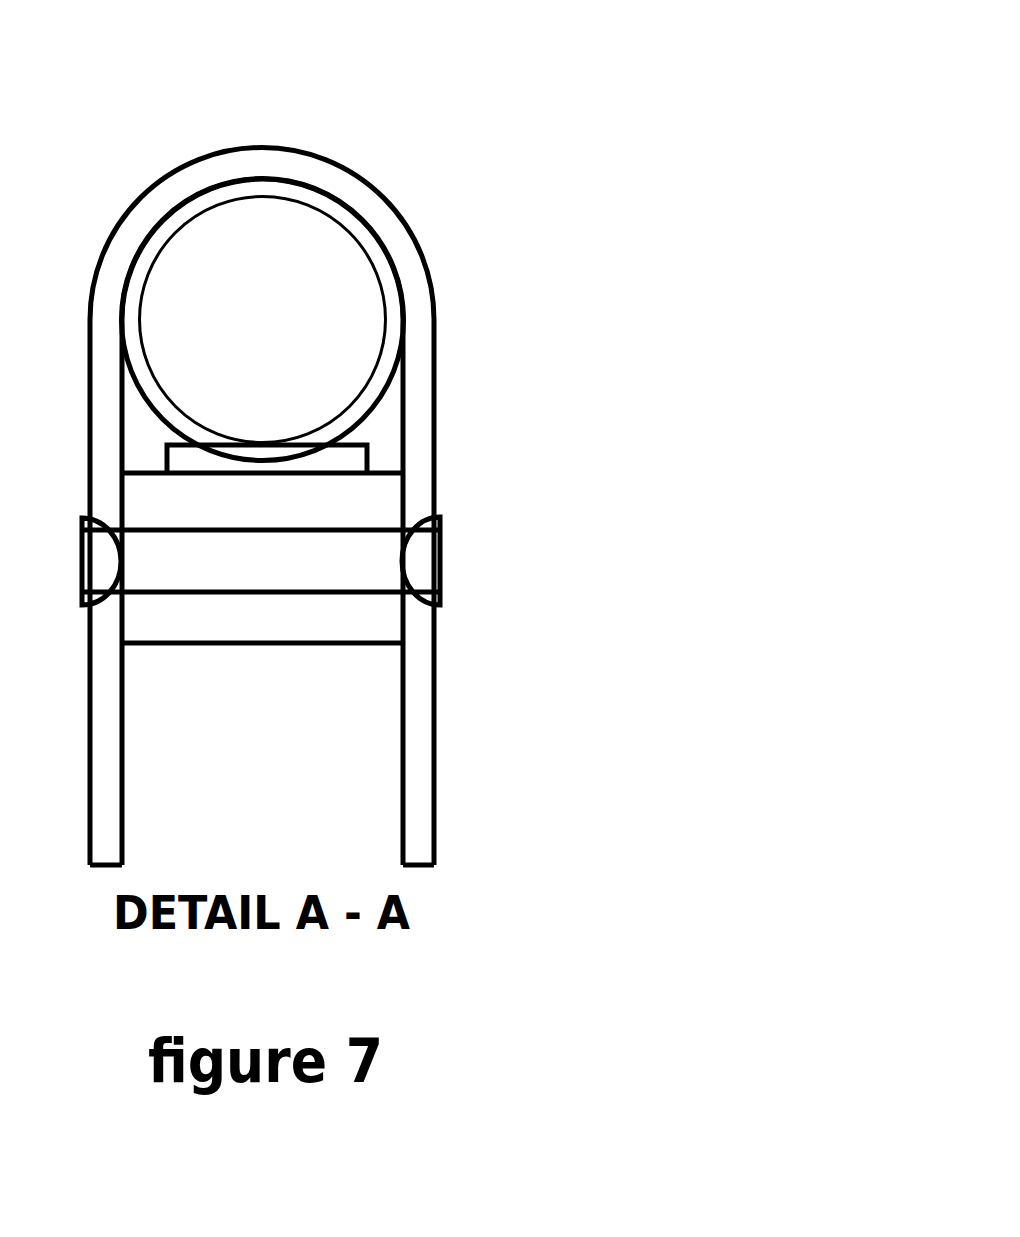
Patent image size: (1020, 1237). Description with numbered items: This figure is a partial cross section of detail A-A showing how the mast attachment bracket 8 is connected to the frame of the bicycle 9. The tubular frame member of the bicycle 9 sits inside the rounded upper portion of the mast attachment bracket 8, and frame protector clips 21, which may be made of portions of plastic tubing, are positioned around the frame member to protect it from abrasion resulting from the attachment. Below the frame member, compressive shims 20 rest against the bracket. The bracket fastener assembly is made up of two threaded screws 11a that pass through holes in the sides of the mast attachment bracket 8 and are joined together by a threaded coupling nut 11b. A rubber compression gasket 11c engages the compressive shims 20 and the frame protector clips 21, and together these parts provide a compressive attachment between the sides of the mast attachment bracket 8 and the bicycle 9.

The mast attachment bracket 8 is at (322, 155).
The bicycle 9 is at (340, 230).
The frame protector clips 21 is at (393, 257).
The compressive shims 20 is at (370, 458).
The threaded screws 11a is at (478, 571).
The threaded coupling nut 11b is at (297, 585).
The rubber compression gasket 11c is at (393, 645).